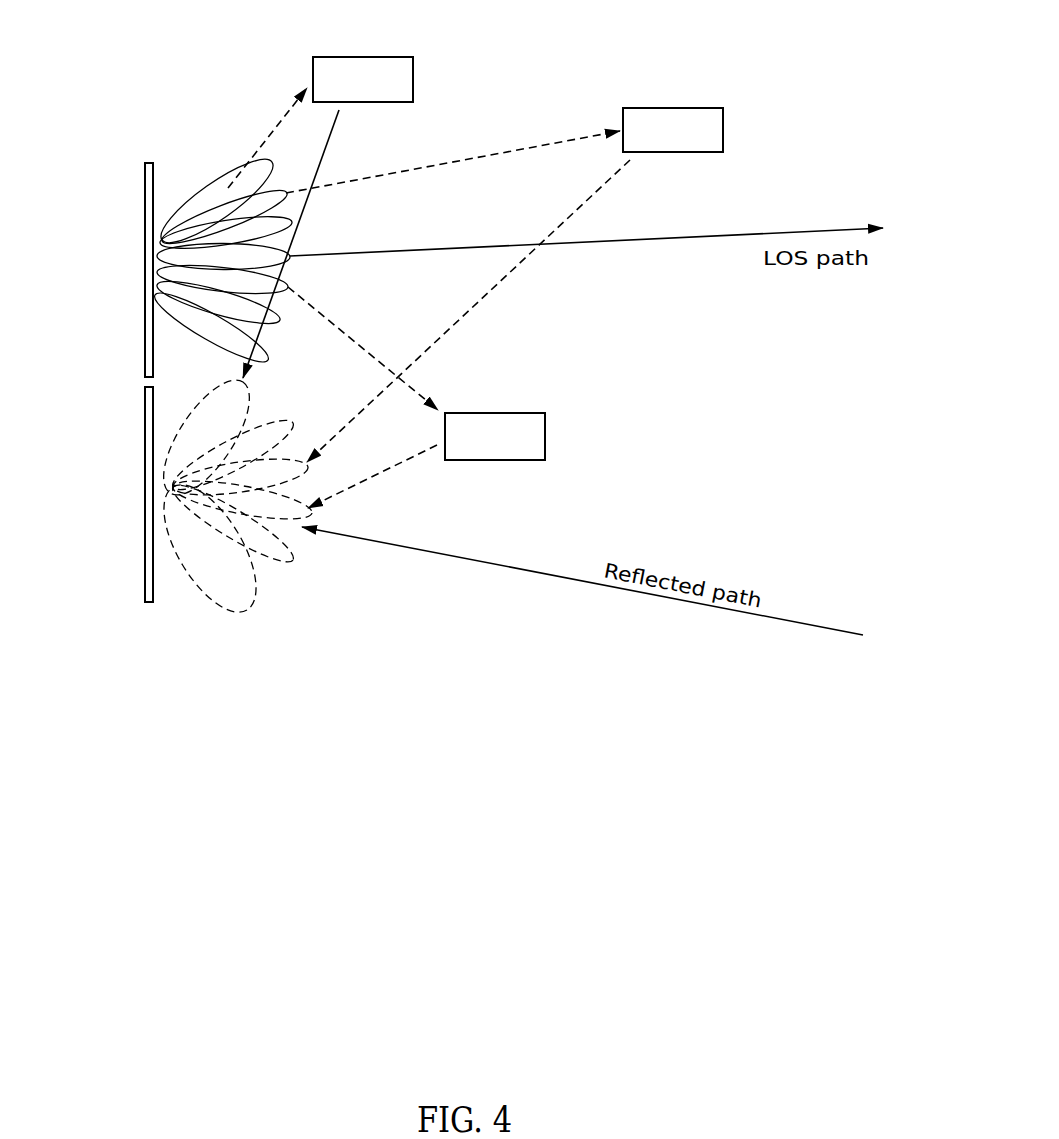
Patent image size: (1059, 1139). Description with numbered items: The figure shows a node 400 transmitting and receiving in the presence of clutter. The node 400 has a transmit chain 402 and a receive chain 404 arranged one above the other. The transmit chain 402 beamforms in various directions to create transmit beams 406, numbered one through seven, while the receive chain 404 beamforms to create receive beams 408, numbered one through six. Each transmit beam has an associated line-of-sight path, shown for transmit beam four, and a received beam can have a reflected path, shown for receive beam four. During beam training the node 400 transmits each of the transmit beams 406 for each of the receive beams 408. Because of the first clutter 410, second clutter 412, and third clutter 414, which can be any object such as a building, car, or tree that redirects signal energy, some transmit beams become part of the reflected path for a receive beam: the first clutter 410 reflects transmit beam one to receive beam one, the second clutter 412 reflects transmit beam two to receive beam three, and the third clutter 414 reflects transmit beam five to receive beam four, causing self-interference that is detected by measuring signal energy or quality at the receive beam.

The node 400 is at (88, 402).
The transmit chain 402 is at (143, 186).
The receive chain 404 is at (143, 578).
The transmit beams 406 is at (192, 165).
The receive beams 408 is at (215, 612).
The clutter 1 410 is at (313, 62).
The clutter 2 412 is at (723, 128).
The clutter 3 414 is at (545, 440).